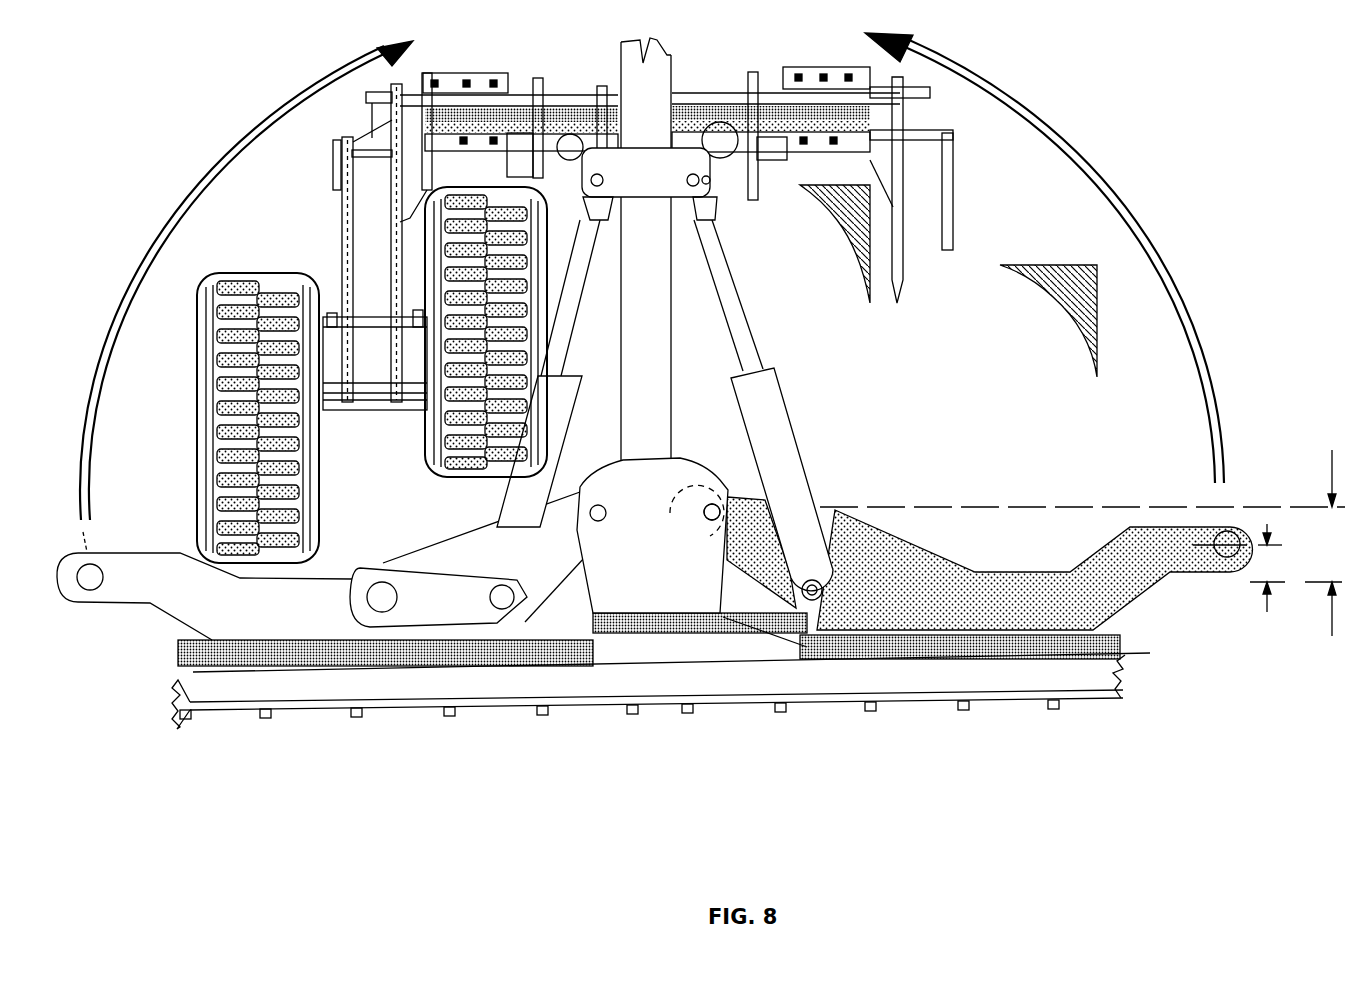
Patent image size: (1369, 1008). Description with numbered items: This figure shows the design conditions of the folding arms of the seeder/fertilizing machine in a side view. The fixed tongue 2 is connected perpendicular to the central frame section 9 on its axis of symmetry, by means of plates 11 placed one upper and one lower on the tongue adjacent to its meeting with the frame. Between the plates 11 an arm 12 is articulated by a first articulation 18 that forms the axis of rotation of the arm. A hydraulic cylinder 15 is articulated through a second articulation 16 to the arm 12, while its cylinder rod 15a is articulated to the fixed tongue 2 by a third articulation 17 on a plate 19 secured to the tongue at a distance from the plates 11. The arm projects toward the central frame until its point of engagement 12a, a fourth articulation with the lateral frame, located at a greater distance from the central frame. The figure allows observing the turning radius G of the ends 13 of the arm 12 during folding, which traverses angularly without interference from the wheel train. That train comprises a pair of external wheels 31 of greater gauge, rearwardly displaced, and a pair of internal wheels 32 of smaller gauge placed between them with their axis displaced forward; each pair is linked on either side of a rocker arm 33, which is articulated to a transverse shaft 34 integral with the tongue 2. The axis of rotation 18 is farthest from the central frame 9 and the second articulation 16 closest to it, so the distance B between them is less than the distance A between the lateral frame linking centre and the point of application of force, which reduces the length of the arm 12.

The fixed tongue 2 is at (650, 100).
The central frame section 9 is at (822, 672).
The plates 11 is at (660, 563).
The arm 12 is at (1023, 597).
The point of engagement 12a is at (1243, 577).
The ends of the arms 13 is at (94, 583).
The hydraulic cylinder 15 is at (783, 445).
The cylinder rod 15a is at (737, 298).
The second articulation 16 is at (797, 643).
The third articulation 17 is at (706, 180).
The first articulation 18 is at (720, 510).
The plate 19 is at (632, 173).
The external wheels 31 is at (197, 481).
The internal wheels 32 is at (450, 478).
The rocker arm 33 is at (340, 228).
The transverse shaft 34 is at (757, 100).
The turning radius G is at (1185, 278).
The distance A is at (1237, 568).
The distance B is at (1082, 543).